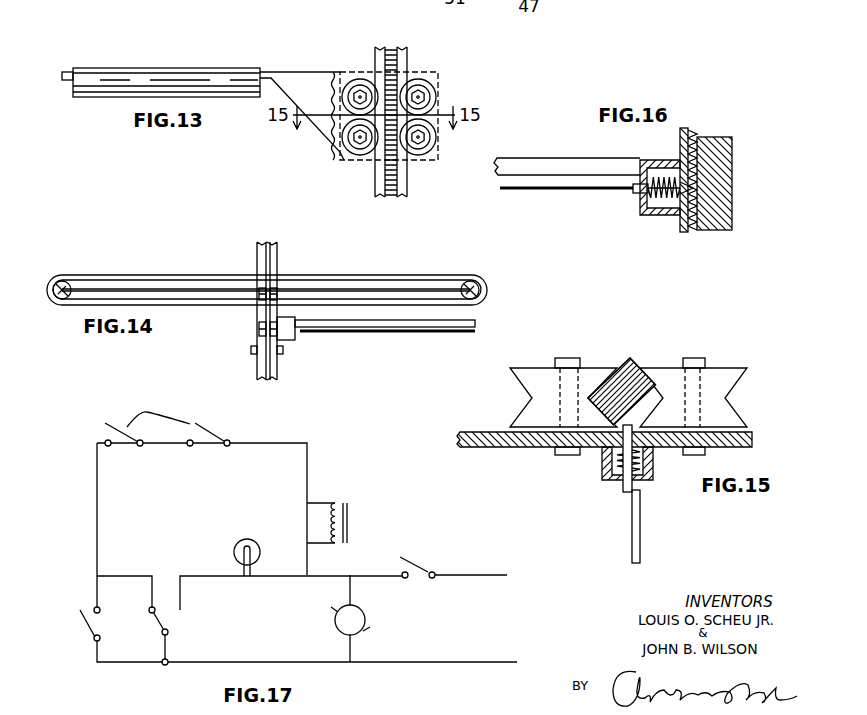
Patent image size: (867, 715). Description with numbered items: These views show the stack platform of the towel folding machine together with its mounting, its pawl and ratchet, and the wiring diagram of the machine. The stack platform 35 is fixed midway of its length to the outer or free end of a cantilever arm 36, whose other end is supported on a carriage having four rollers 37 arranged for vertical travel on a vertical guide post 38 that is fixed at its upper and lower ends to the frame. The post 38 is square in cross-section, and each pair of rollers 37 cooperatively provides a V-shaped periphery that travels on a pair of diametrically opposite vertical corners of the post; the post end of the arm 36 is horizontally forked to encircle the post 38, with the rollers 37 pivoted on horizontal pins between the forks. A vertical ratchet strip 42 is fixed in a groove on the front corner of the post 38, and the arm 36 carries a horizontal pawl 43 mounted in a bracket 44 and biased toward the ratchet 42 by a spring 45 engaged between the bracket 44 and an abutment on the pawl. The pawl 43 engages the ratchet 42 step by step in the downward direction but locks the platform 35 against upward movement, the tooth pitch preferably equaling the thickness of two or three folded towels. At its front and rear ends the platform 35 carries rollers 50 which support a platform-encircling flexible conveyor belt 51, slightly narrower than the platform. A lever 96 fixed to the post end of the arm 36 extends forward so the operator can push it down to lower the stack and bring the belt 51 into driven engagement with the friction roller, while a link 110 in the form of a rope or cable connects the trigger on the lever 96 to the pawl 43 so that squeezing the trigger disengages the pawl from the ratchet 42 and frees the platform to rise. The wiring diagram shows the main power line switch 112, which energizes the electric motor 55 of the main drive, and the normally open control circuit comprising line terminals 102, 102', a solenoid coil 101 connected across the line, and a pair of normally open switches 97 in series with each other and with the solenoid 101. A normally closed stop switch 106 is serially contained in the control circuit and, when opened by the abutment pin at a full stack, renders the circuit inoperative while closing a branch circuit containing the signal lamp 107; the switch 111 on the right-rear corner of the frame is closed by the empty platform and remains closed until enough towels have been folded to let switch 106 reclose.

In FIG. 13, the stack platform 35 is at (67, 72).
In FIG. 14, the stack platform 35 is at (154, 280).
In FIG. 13, the cantilever arm 36 is at (305, 78).
In FIG. 16, the cantilever arm 36 is at (680, 142).
In FIG. 14, the cantilever arm 36 is at (280, 362).
In FIG. 15, the cantilever arm 36 is at (528, 440).
In FIG. 13, the rollers 37 is at (428, 80).
In FIG. 14, the rollers 37 is at (257, 338).
In FIG. 15, the rollers 37 is at (588, 377).
In FIG. 13, the guide post 38 is at (408, 190).
In FIG. 16, the guide post 38 is at (720, 158).
In FIG. 14, the guide post 38 is at (280, 378).
In FIG. 15, the guide post 38 is at (630, 367).
In FIG. 13, the ratchet strip 42 is at (390, 48).
In FIG. 16, the ratchet strip 42 is at (703, 226).
In FIG. 16, the pawl 43 is at (640, 195).
In FIG. 15, the pawl 43 is at (625, 488).
In FIG. 16, the bracket 44 is at (648, 212).
In FIG. 14, the bracket 44 is at (296, 337).
In FIG. 15, the bracket 44 is at (602, 470).
In FIG. 16, the spring 45 is at (668, 212).
In FIG. 15, the spring 45 is at (648, 468).
In FIG. 14, the rollers 50 is at (52, 284).
In FIG. 13, the conveyor belt 51 is at (203, 78).
In FIG. 14, the conveyor belt 51 is at (352, 278).
In FIG. 17, the electric motor 55 is at (365, 615).
In FIG. 16, the lever 96 is at (553, 165).
In FIG. 14, the lever 96 is at (478, 324).
In FIG. 17, the switches 97 is at (167, 417).
In FIG. 17, the solenoid coil 101 is at (347, 517).
In FIG. 17, the line terminal 102 is at (512, 590).
In FIG. 17, the line terminal 102' is at (520, 640).
In FIG. 17, the stop switch 106 is at (160, 622).
In FIG. 17, the signal lamp 107 is at (234, 552).
In FIG. 16, the link 110 is at (553, 192).
In FIG. 14, the link 110 is at (447, 334).
In FIG. 15, the link 110 is at (641, 522).
In FIG. 17, the switch 111 is at (78, 619).
In FIG. 17, the main power line switch 112 is at (415, 566).